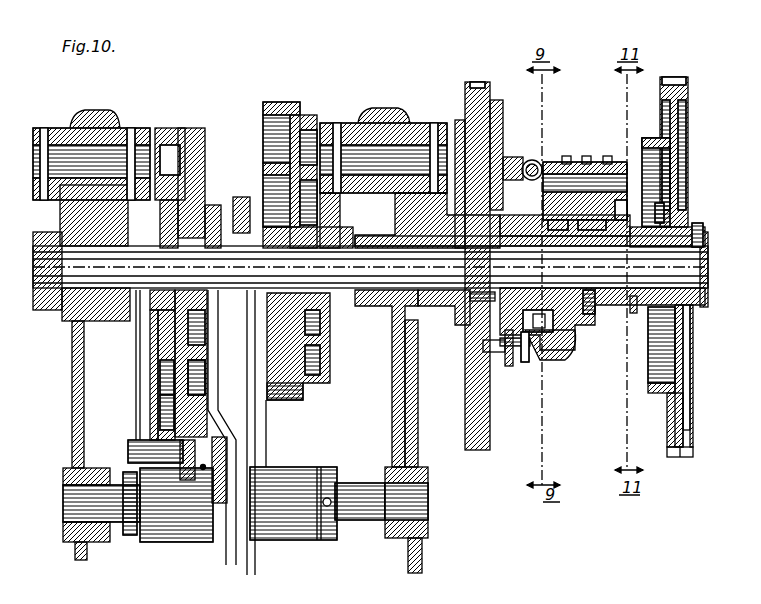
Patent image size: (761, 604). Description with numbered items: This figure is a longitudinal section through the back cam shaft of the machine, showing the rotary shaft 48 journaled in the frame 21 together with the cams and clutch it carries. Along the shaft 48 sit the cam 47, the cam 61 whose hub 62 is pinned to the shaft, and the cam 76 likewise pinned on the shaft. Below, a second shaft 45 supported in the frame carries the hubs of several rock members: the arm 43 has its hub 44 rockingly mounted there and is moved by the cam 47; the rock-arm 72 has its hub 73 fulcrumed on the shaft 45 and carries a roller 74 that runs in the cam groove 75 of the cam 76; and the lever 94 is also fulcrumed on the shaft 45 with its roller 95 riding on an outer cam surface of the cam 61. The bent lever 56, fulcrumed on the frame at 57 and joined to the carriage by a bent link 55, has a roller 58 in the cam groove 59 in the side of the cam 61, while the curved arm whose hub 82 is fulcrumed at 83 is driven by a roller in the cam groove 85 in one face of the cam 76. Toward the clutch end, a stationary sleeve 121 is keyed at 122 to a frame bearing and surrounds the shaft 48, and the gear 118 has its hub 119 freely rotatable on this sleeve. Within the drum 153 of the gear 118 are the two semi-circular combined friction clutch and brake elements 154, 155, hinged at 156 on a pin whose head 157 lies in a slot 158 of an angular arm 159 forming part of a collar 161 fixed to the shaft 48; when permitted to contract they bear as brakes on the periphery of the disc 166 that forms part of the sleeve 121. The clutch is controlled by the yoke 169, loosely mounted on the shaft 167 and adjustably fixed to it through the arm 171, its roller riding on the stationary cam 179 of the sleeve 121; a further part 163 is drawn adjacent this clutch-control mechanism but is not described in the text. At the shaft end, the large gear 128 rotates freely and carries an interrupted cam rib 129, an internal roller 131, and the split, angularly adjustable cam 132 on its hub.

The frame 21 is at (424, 556).
The arm 43 is at (245, 443).
The hub 44 is at (165, 510).
The shaft 45 is at (355, 490).
The cam 47 is at (198, 372).
The rotary shaft 48 is at (73, 258).
The bent link 55 is at (165, 445).
The bent lever 56 is at (140, 352).
The fulcrum 57 is at (90, 155).
The roller 58 is at (185, 140).
The cam groove 59 is at (163, 400).
The cam 61 is at (165, 140).
The hub 62 is at (160, 312).
The rock-arm 72 is at (248, 327).
The hub 73 is at (280, 540).
The roller 74 is at (275, 262).
The cam groove 75 is at (263, 137).
The cam 76 is at (287, 102).
The hub 82 is at (335, 193).
The fulcrum 83 is at (375, 155).
The cam groove 85 is at (315, 360).
The lever 94 is at (214, 391).
The roller 95 is at (212, 215).
The gear 118 is at (477, 95).
The hub 119 is at (440, 315).
The stationary sleeve 121 is at (405, 322).
The key 122 is at (372, 247).
The large gear 128 is at (683, 457).
The interrupted cam rib 129 is at (647, 398).
The roller 131 is at (662, 212).
The cam 132 is at (636, 315).
The drum 153 is at (497, 150).
The combined friction clutch and brake element 154 is at (500, 342).
The combined friction clutch and brake element 155 is at (490, 352).
The hinge 156 is at (515, 368).
The pin head 157 is at (540, 341).
The slot 158 is at (530, 360).
The angular arm 159 is at (572, 360).
The collar 161 is at (620, 300).
The bolt 163 is at (532, 160).
The disc 166 is at (462, 195).
The shaft 167 is at (550, 170).
The yoke 169 is at (605, 200).
The arm 171 is at (560, 200).
The stationary cam 179 is at (465, 215).